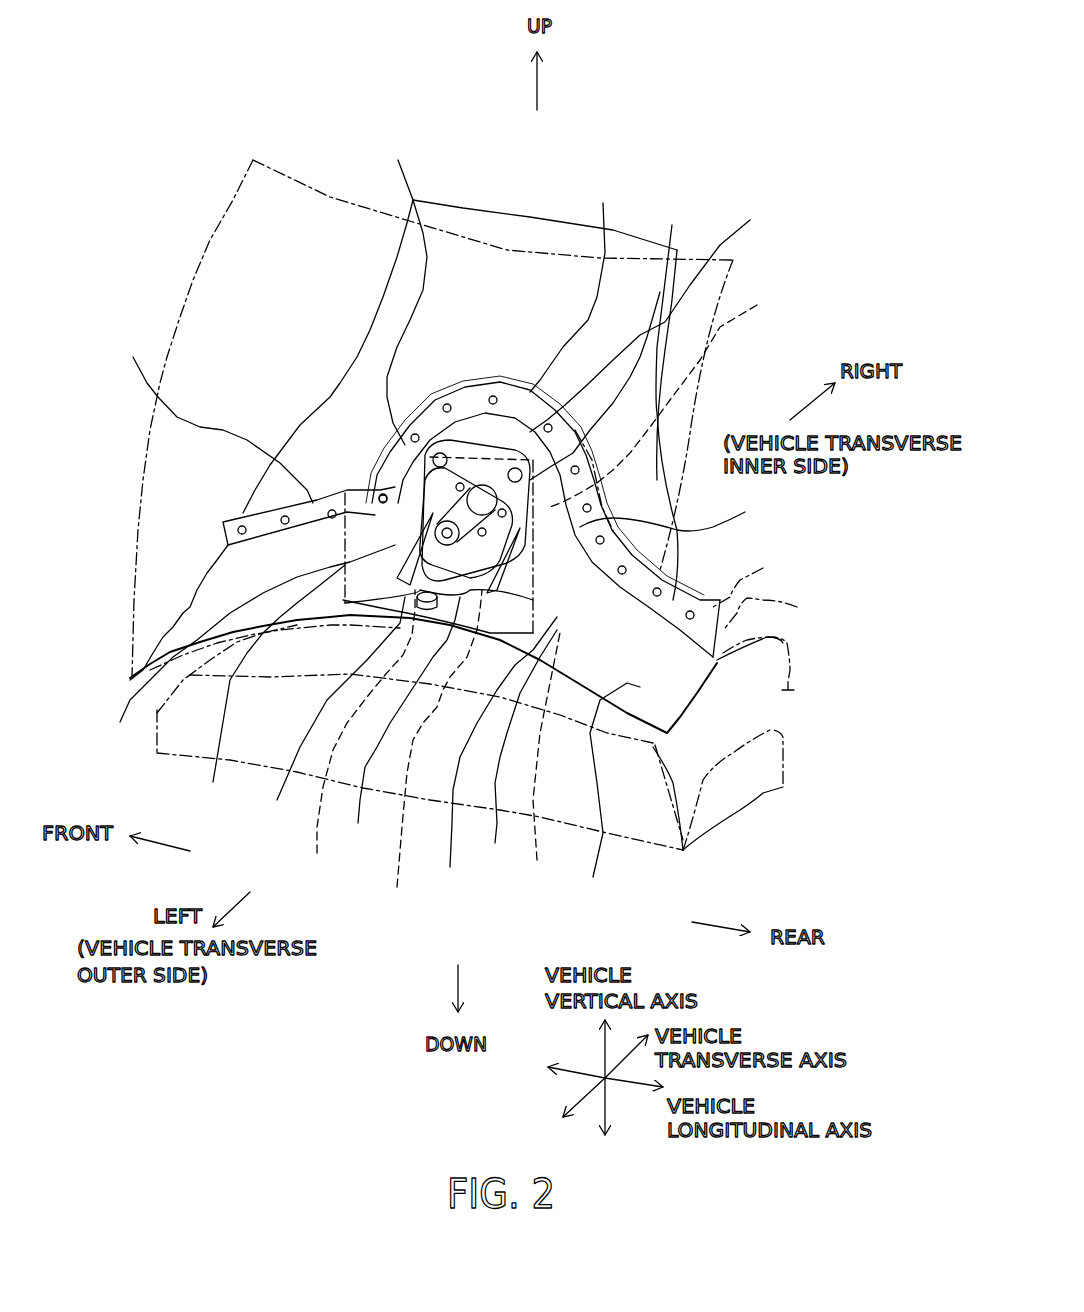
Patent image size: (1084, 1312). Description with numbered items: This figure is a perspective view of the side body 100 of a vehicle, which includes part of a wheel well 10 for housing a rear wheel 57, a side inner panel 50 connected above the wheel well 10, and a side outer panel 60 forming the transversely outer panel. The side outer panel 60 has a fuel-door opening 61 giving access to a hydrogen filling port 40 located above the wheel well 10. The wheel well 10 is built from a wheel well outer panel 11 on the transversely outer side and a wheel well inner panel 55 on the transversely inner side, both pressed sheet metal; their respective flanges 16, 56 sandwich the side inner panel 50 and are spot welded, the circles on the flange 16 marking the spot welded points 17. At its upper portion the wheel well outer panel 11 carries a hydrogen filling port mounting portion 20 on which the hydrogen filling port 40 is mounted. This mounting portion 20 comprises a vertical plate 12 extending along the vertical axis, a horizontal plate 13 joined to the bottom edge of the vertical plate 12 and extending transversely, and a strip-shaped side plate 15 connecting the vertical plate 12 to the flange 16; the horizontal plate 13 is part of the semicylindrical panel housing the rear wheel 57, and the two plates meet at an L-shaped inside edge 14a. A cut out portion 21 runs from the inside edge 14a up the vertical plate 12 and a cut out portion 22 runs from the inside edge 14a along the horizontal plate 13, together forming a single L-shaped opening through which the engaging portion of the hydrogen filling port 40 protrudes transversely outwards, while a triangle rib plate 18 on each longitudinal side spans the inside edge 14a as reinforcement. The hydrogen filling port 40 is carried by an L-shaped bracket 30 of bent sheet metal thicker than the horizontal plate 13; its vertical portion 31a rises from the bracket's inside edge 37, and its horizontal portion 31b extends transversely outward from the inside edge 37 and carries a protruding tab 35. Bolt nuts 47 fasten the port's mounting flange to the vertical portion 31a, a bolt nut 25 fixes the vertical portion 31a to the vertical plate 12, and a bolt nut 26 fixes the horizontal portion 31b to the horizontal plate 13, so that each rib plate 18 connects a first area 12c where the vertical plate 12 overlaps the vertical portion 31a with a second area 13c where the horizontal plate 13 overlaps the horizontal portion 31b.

The side body 100 is at (150, 246).
The side outer panel 60 is at (228, 199).
The hydrogen filling port mounting portion 20 is at (360, 493).
The flange 16 is at (217, 416).
The spot welded points 17 is at (275, 513).
The hydrogen filling port 40 is at (438, 385).
The bolt nut 25 is at (430, 450).
The vertical plate 12 is at (470, 440).
The L-shaped bracket 30 is at (495, 440).
The cut out portion 21 is at (570, 283).
The side plate 15 is at (606, 400).
The bolt nuts 47 is at (651, 316).
The side inner panel 50 is at (628, 238).
The vertical portion 31a is at (668, 392).
The inside edge 14a is at (677, 509).
The wheel well 10 is at (676, 684).
The wheel well outer panel 11 is at (611, 795).
The horizontal plate 13 is at (261, 689).
The bolt nut 26 is at (335, 716).
The cut out portion 22 is at (401, 728).
The tab 35 is at (358, 738).
The horizontal portion 31b is at (432, 754).
The second area 13c is at (495, 757).
The rib plate 18 is at (520, 749).
The first area 12c is at (541, 760).
The inside edge 37 is at (247, 646).
The fuel-door opening 61 is at (155, 756).
The wheel well inner panel 55 is at (763, 568).
The flange 56 is at (797, 607).
The rear wheel 57 is at (787, 727).